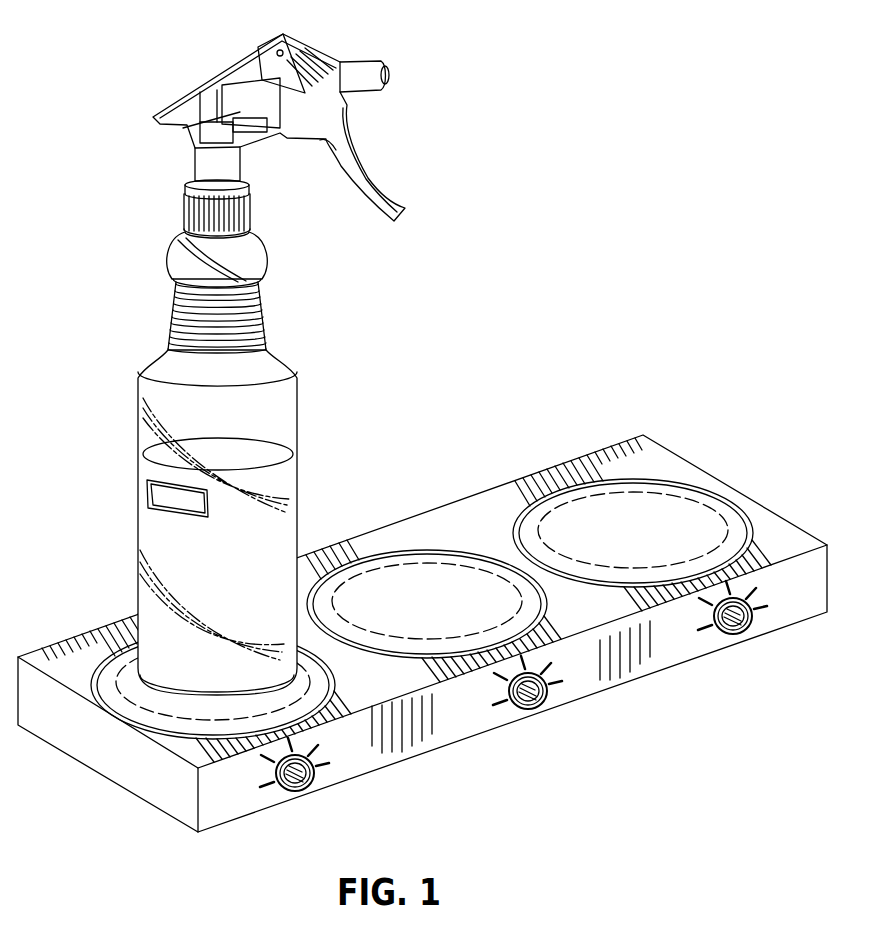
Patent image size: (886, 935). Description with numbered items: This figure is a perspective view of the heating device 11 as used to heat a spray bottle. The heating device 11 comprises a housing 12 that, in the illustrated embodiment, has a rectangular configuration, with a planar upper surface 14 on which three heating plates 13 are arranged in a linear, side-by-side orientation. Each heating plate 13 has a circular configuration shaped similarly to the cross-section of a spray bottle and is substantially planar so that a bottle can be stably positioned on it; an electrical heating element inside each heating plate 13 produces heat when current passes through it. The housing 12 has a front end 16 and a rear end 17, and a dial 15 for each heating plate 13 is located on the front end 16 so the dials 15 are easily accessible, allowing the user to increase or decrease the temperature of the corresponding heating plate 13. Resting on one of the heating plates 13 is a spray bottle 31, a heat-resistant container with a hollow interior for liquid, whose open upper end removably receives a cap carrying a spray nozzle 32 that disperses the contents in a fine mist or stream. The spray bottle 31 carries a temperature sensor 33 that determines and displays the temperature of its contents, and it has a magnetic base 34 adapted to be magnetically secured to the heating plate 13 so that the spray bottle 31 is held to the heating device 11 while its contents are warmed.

The heating device 11 is at (508, 297).
The housing 12 is at (592, 468).
The heating plate 13 is at (697, 507).
The planar upper surface 14 is at (453, 542).
The dial 15 is at (320, 774).
The front end 16 is at (598, 658).
The rear end 17 is at (467, 498).
The spray bottle 31 is at (150, 368).
The spray nozzle 32 is at (188, 112).
The temperature sensor 33 is at (148, 490).
The magnetic base 34 is at (140, 676).